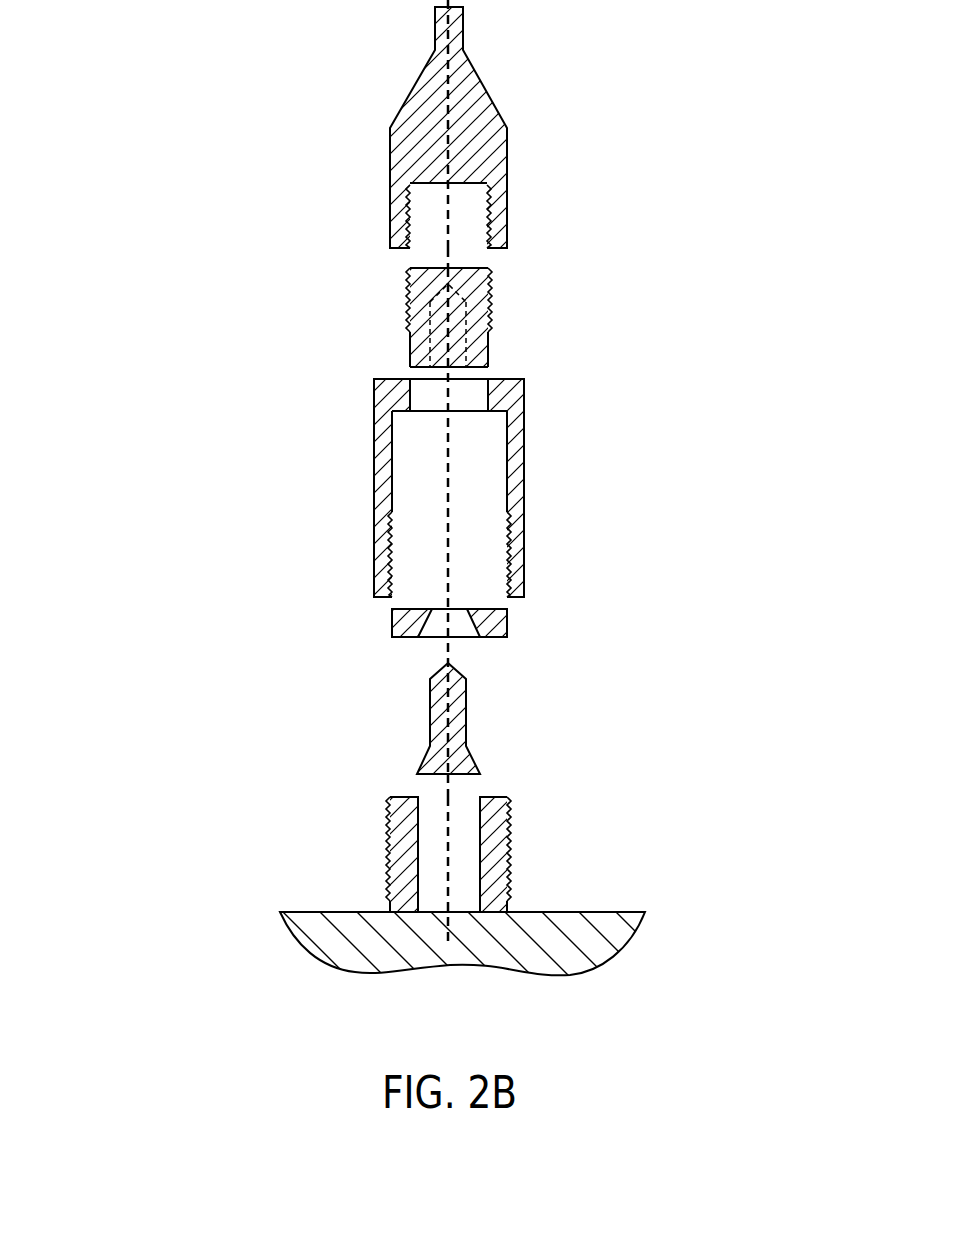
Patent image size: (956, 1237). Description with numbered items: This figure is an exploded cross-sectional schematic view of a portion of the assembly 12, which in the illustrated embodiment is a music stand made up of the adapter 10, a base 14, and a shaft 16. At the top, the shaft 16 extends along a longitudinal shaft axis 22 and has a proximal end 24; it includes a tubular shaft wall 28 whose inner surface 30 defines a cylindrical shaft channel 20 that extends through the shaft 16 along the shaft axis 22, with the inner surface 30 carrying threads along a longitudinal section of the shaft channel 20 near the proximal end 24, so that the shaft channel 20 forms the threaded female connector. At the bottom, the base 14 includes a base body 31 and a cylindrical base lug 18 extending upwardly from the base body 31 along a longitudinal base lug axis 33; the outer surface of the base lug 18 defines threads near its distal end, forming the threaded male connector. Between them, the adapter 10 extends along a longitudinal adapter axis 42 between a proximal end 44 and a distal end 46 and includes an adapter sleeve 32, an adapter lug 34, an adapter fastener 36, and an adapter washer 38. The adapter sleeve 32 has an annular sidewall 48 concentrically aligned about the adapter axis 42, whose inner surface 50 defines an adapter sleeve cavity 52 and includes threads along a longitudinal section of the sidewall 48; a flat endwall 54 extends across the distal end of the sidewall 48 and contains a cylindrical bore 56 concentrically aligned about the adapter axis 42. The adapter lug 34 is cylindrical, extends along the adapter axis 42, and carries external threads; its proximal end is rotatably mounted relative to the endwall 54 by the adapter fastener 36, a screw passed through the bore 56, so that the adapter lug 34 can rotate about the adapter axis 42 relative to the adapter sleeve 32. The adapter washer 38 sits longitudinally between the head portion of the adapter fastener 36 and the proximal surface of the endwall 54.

The adapter 10 is at (343, 251).
The assembly 12 is at (155, 182).
The base 14 is at (316, 893).
The shaft 16 is at (312, 120).
The base lug 18 is at (492, 856).
The shaft channel 20 is at (478, 198).
The shaft axis 22 is at (521, 907).
The proximal end 24 is at (403, 104).
The shaft wall 28 is at (405, 189).
The inner surface 30 is at (412, 219).
The base body 31 is at (338, 950).
The adapter sleeve 32 is at (515, 453).
The base lug axis 33 is at (521, 907).
The adapter lug 34 is at (488, 346).
The adapter fastener 36 is at (465, 718).
The adapter washer 38 is at (503, 629).
The adapter axis 42 is at (450, 922).
The proximal end 44 is at (530, 765).
The distal end 46 is at (530, 262).
The sidewall 48 is at (520, 493).
The inner surface 50 is at (496, 533).
The adapter sleeve cavity 52 is at (427, 471).
The endwall 54 is at (515, 394).
The bore 56 is at (463, 430).